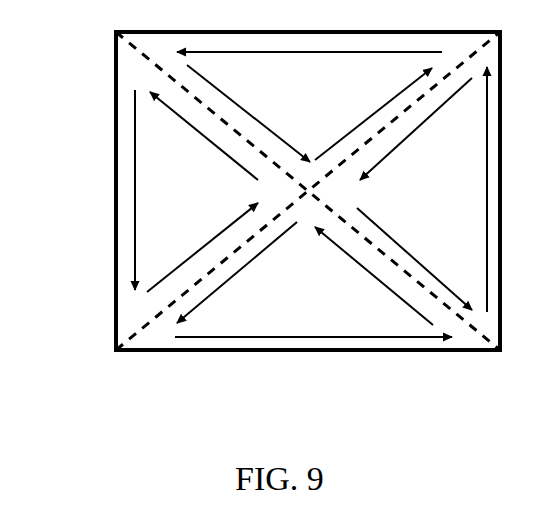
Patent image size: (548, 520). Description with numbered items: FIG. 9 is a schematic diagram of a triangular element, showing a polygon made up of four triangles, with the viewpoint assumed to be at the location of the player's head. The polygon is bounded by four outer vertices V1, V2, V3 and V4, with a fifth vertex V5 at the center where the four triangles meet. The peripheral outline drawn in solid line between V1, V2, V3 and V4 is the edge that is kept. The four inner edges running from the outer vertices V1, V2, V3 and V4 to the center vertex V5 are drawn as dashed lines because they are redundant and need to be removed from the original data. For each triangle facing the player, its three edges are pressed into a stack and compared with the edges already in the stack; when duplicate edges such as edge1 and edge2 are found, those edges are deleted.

The first vertex V1 is at (111, 36).
The second vertex V2 is at (501, 39).
The third vertex V3 is at (111, 343).
The fourth vertex V4 is at (503, 344).
The fifth (center) vertex V5 is at (308, 191).
The edge 1 edge1 is at (200, 241).
The edge 2 edge2 is at (240, 282).